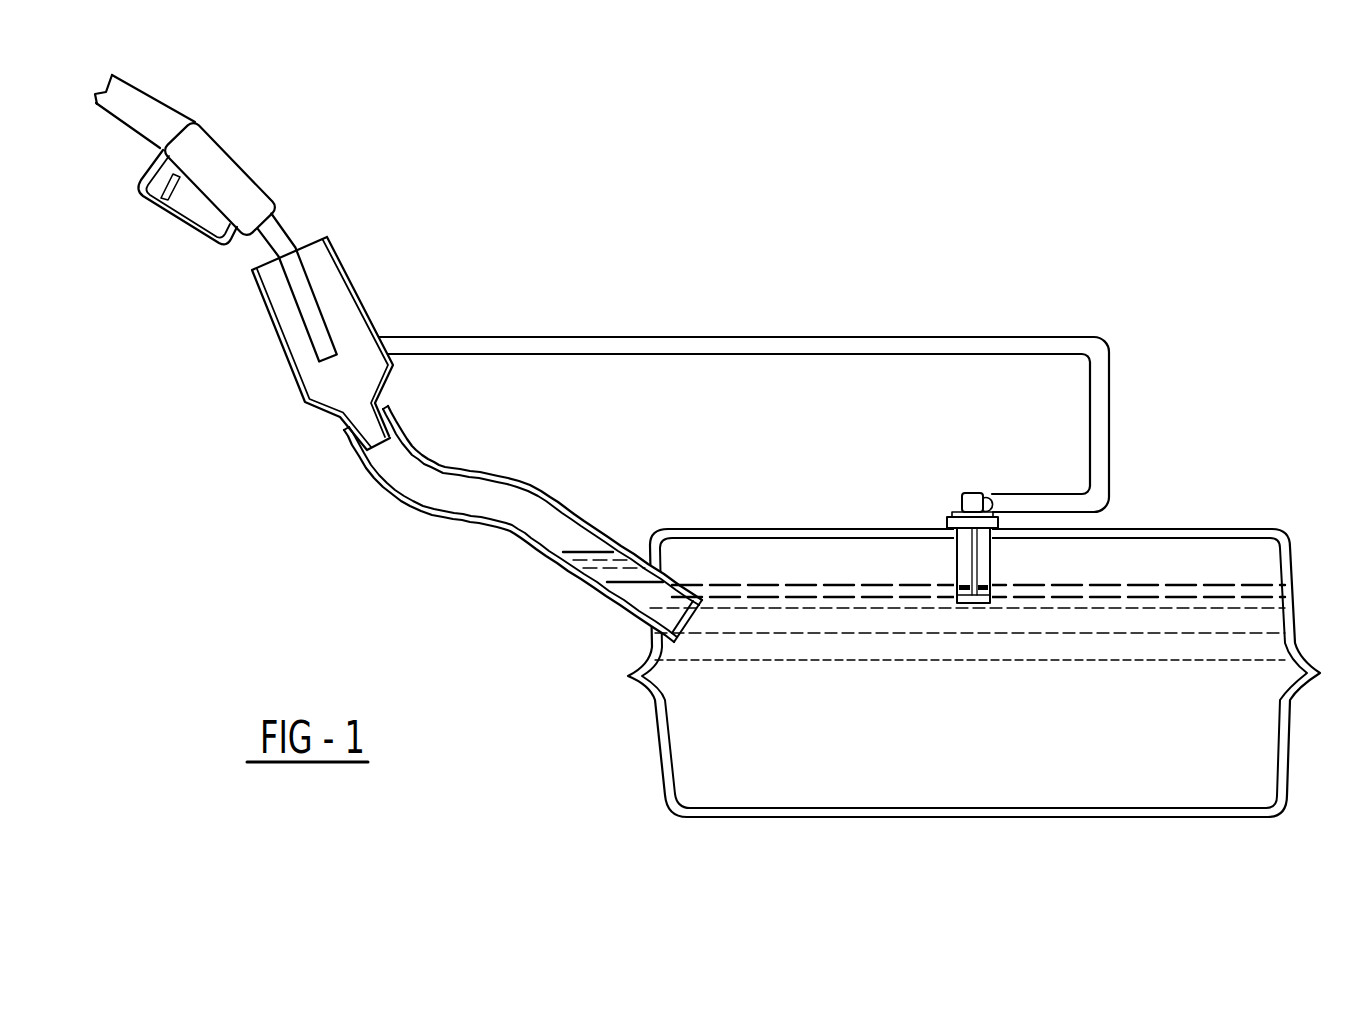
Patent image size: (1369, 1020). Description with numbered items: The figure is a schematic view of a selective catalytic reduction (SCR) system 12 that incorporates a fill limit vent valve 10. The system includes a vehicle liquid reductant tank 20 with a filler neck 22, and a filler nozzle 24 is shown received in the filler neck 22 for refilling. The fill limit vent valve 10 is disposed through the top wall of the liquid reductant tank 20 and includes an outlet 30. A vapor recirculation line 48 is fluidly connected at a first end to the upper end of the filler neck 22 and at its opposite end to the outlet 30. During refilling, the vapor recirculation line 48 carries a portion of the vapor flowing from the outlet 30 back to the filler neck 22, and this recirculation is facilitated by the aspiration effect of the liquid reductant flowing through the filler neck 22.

The fill limit vent valve 10 is at (927, 502).
The selective catalytic reduction (SCR) system 12 is at (735, 227).
The liquid reductant tank 20 is at (1297, 612).
The filler neck 22 is at (450, 518).
The filler nozzle 24 is at (277, 235).
The outlet 30 is at (938, 497).
The vapor recirculation line 48 is at (648, 345).